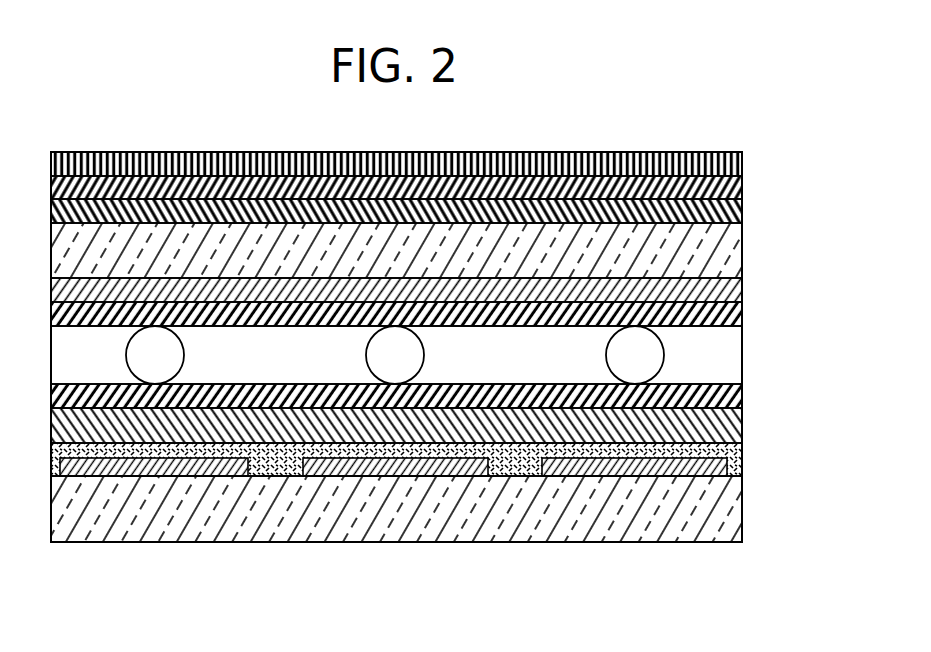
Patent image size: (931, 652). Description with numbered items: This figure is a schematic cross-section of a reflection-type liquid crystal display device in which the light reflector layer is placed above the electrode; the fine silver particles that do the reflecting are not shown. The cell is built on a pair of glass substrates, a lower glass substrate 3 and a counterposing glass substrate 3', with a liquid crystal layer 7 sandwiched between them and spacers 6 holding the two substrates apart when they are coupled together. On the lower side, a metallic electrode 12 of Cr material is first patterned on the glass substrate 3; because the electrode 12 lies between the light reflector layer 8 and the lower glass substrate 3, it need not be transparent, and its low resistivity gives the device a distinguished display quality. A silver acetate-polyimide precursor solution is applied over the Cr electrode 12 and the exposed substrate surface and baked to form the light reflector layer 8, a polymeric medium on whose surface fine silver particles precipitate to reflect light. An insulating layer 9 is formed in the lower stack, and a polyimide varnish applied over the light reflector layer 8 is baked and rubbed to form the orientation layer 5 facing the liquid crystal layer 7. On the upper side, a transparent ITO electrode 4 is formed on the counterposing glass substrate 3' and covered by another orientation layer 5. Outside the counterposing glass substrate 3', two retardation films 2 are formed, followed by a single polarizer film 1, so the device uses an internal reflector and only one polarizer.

The polarizer film 1 is at (743, 157).
The retardation films 2 is at (743, 184).
The counterposing glass substrate 3' is at (427, 250).
The transparent electrode 4 is at (743, 280).
The orientation layer 5 is at (743, 308).
The spacers 6 is at (652, 350).
The liquid crystal layer 7 is at (727, 362).
The light reflector layer 8 is at (733, 420).
The insulating layer 9 is at (733, 448).
The metallic electrode 12 is at (147, 467).
The lower glass substrate 3 is at (407, 535).